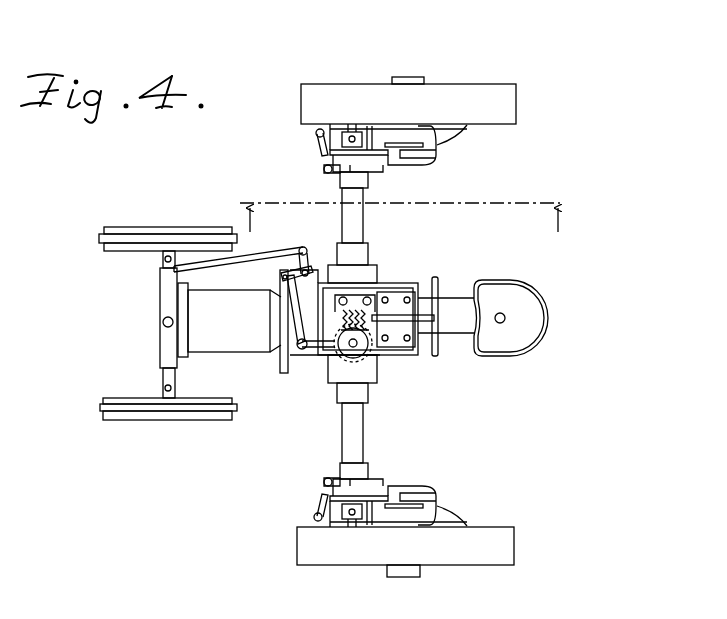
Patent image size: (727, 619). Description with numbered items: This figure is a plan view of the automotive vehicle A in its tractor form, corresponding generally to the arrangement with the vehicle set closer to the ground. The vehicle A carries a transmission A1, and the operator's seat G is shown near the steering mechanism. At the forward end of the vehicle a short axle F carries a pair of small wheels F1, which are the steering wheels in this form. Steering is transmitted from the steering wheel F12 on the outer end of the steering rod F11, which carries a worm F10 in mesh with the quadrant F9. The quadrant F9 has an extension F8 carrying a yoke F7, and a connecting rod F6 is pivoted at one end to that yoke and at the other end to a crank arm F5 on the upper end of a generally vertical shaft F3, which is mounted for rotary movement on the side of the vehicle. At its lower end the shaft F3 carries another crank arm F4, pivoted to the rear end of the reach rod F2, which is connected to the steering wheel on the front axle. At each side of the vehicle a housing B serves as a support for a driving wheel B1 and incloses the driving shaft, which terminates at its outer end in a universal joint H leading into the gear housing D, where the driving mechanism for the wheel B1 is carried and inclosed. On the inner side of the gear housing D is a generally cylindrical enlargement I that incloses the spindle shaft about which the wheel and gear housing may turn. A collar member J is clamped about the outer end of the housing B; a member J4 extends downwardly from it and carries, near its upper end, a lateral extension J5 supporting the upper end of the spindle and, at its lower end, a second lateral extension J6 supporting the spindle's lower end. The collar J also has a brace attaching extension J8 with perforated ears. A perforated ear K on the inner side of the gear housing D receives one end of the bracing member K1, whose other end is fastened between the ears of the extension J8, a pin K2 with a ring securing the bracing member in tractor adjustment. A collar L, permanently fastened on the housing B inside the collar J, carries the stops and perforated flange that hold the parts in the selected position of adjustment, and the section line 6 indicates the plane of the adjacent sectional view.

The section line 6- 6 is at (403, 211).
The automotive vehicle A is at (195, 330).
The transmission A1 is at (332, 290).
The housing B is at (363, 222).
The wheel B1 is at (516, 95).
The gear housing D is at (464, 130).
The short axle F is at (163, 270).
The wheel F1 is at (140, 230).
The reach rod F2 is at (252, 260).
The generally vertical shaft F3 is at (312, 276).
The crank arm F4 is at (308, 268).
The crank arm F5 is at (299, 256).
The connecting rod F6 is at (292, 308).
The yoke F7 is at (295, 362).
The extension F8 is at (320, 350).
The quadrant F9 is at (362, 350).
The worm F10 is at (360, 300).
The steering rod F11 is at (398, 318).
The steering wheel F12 is at (441, 290).
The seat G is at (526, 296).
The universal joint H is at (350, 132).
The generally cylindrical enlargement I is at (408, 138).
The collar member J is at (368, 160).
The member J4 is at (388, 143).
The lateral extension J5 is at (369, 128).
The lateral extension J6 is at (438, 156).
The brace attaching extension J8 is at (324, 169).
The perforated ear K is at (331, 130).
The bracing member K1 is at (320, 147).
The pin K2 is at (316, 133).
The collar L is at (368, 182).